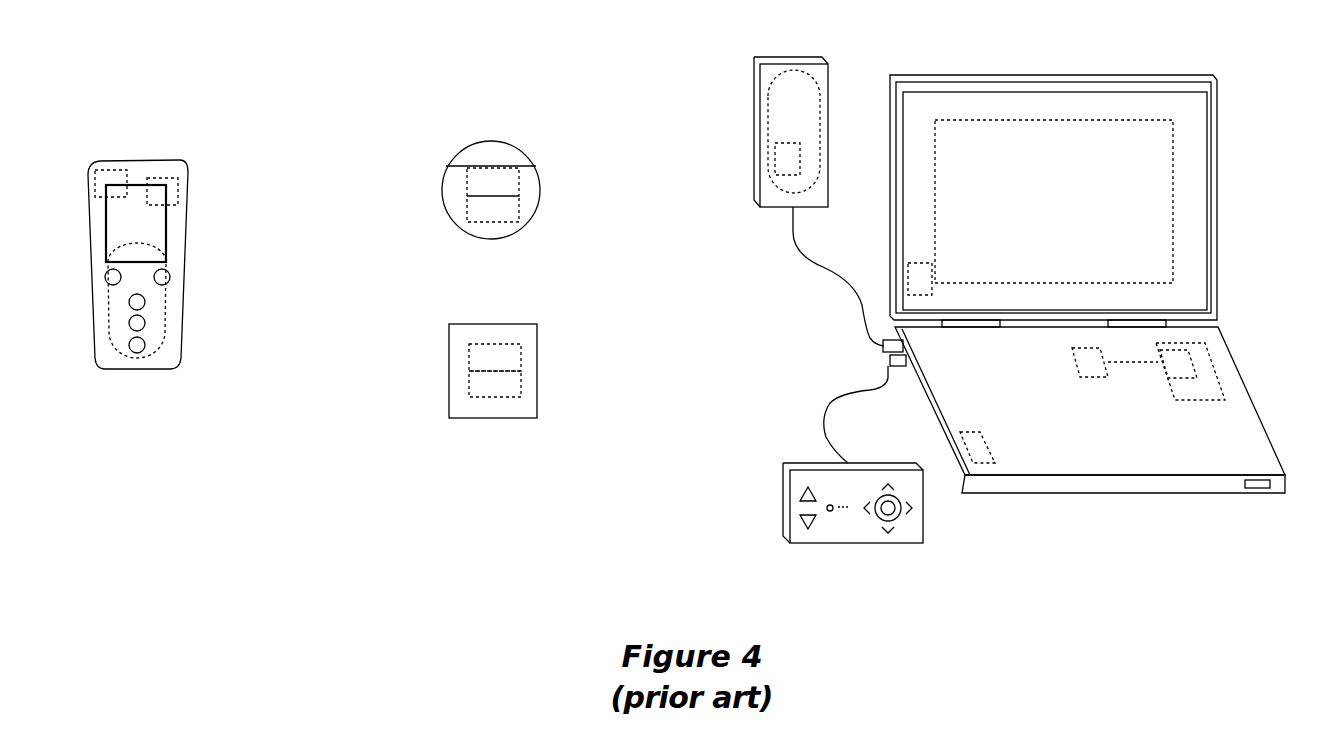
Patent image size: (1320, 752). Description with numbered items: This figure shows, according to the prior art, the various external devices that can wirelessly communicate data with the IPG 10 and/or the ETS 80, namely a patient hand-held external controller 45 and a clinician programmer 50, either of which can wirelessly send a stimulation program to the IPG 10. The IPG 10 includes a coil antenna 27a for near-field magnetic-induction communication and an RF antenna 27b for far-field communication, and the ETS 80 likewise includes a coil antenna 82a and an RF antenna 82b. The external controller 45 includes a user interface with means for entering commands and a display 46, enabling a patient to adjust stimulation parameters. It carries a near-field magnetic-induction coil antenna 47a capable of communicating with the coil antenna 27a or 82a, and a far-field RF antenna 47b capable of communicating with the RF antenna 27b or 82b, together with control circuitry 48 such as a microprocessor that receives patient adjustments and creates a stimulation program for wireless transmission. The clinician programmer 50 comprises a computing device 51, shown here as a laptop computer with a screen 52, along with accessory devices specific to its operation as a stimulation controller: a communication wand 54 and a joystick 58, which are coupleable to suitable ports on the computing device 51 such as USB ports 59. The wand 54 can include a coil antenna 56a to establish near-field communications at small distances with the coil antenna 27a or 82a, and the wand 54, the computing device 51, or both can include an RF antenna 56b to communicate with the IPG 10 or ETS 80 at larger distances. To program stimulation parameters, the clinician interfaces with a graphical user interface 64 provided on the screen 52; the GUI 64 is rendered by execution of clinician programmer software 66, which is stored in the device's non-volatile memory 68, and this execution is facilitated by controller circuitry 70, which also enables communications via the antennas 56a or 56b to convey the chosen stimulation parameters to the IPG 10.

The IPG 10 is at (543, 245).
The coil antenna 27a is at (519, 182).
The RF antenna 27b is at (519, 208).
The external controller 45 is at (200, 143).
The display 46 is at (126, 233).
The near-field magnetic-induction coil antenna 47a is at (167, 305).
The far-field RF antenna 47b is at (179, 189).
The control circuitry 48 is at (99, 186).
The clinician programmer 50 is at (1224, 54).
The computing device 51 is at (1102, 508).
The screen 52 is at (1188, 158).
The communication wand 54 is at (737, 52).
The coil antenna 56a is at (820, 88).
The RF antenna 56b is at (782, 143).
The joystick 58 is at (822, 444).
The USB ports 59 is at (907, 388).
The graphical user interface 64 is at (1010, 122).
The clinician programmer software 66 is at (1178, 365).
The non-volatile memory 68 is at (1203, 395).
The controller circuitry 70 is at (1080, 362).
The ETS 80 is at (480, 315).
The coil antenna 82a is at (520, 357).
The RF antenna 82b is at (520, 383).